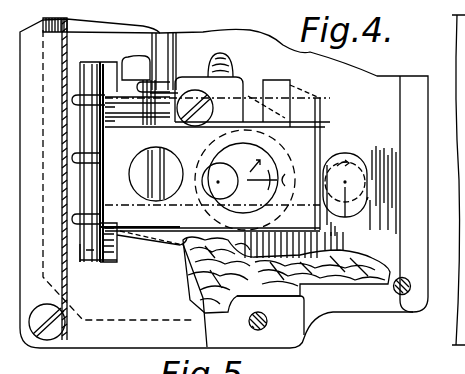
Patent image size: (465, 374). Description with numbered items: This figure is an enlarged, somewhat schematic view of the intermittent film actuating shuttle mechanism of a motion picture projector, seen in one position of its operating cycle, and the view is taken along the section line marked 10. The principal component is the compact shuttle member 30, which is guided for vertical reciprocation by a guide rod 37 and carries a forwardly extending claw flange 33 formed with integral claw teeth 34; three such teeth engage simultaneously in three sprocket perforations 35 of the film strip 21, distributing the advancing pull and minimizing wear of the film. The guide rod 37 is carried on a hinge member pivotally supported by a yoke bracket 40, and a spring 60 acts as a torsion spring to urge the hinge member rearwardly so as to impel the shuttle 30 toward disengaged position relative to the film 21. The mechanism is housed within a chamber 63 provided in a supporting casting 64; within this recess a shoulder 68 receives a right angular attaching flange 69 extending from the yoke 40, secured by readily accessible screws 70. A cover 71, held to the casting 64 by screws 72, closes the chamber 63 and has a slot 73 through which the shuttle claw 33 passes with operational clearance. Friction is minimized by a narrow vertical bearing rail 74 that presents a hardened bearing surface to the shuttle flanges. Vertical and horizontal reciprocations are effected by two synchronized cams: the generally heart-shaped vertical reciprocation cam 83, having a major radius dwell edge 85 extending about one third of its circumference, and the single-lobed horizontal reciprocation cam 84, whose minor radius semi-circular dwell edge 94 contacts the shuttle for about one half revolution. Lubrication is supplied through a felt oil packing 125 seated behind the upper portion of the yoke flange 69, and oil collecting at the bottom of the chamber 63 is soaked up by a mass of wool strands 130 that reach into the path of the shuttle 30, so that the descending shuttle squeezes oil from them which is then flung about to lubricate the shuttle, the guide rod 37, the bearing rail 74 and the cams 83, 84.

The housing 10 is at (95, 68).
The film strip 21 is at (65, 170).
The shuttle member 30 is at (234, 166).
The claw flange 33 is at (100, 153).
The claw teeth 34 is at (72, 99).
The sprocket perforations 35 is at (70, 137).
The guide rod 37 is at (134, 83).
The yoke bracket 40 is at (170, 172).
The spring 60 is at (163, 252).
The chamber 63 is at (304, 318).
The supporting casting 64 is at (380, 305).
The shoulder 68 is at (205, 65).
The attaching flange 69 is at (190, 83).
The screws 70 is at (197, 105).
The cover 71 is at (135, 334).
The screws 72 is at (46, 334).
The slot 73 is at (90, 260).
The bearing rail 74 is at (273, 80).
The vertical reciprocation cam 83 is at (272, 186).
The horizontal reciprocation cam 84 is at (368, 197).
The dwell edge 85 is at (272, 103).
The minor radius dwell edge 94 is at (347, 158).
The oil packing 125 is at (232, 60).
The wool strands 130 is at (331, 274).